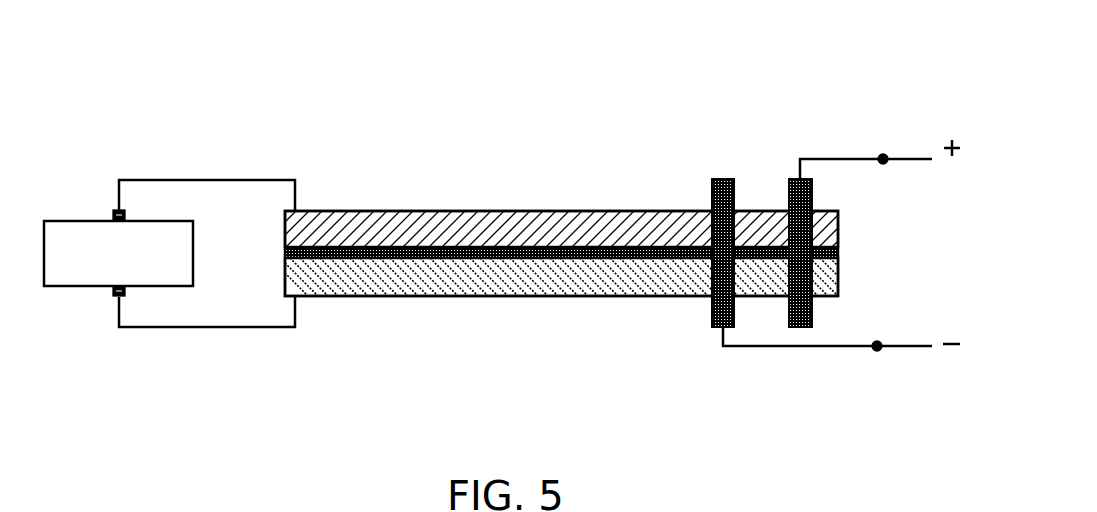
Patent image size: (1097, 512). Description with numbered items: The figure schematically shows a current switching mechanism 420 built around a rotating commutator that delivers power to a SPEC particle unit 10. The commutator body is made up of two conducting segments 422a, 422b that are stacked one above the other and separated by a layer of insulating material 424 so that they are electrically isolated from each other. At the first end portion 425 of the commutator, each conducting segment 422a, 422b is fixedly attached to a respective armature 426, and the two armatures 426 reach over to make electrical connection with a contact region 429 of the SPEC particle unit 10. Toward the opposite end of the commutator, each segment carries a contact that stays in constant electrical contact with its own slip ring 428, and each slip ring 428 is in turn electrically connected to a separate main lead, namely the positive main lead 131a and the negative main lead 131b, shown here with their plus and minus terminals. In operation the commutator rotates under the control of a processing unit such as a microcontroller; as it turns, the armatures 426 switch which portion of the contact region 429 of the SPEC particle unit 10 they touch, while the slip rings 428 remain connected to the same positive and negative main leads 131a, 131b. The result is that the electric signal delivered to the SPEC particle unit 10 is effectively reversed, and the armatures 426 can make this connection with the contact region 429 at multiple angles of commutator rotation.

The SPEC particle unit 10 is at (118, 253).
The current switching mechanism 420 is at (317, 74).
The conducting segment 422a is at (388, 211).
The conducting segment 422b is at (346, 298).
The insulating material 424 is at (486, 211).
The first end portion 425 is at (285, 282).
The armature 426 is at (141, 180).
The slip ring 428 is at (787, 205).
The contact region 429 is at (112, 215).
The positive main lead 131a is at (883, 159).
The negative main lead 131b is at (877, 347).